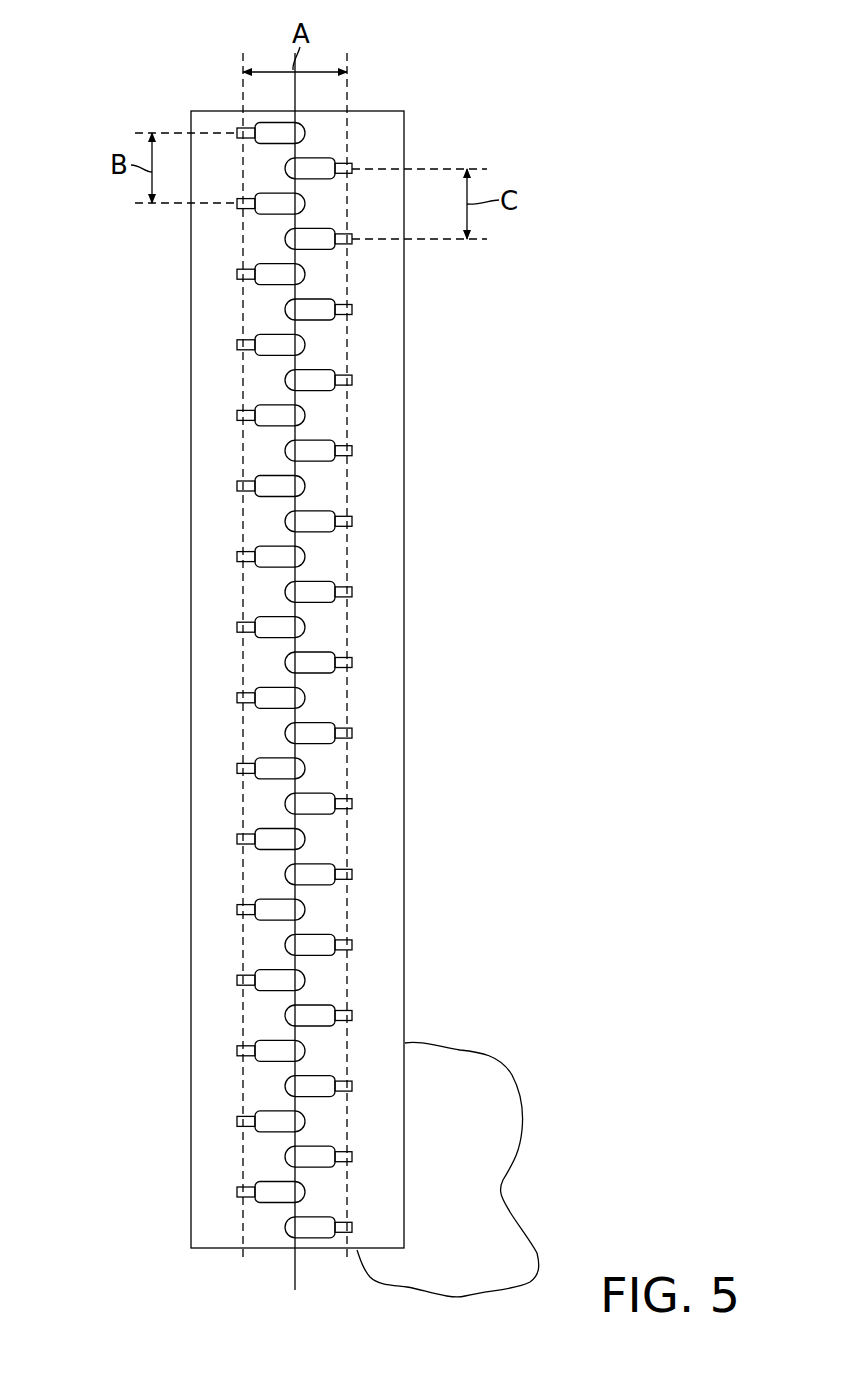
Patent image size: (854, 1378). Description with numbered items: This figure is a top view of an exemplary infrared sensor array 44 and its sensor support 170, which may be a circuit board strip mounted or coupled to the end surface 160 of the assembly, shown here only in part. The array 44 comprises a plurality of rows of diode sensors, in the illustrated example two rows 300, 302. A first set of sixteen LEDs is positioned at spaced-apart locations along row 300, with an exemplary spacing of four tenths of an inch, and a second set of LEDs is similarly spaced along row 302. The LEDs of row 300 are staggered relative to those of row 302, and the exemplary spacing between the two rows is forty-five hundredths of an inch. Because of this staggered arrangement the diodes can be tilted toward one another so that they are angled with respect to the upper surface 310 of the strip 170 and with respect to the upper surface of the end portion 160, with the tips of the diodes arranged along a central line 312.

The array 44 is at (172, 903).
The first row of sensors 300 is at (240, 100).
The second row of sensors 302 is at (348, 100).
The line 312 is at (297, 1267).
The support 170 is at (262, 1250).
The upper surface of the strip 310 is at (372, 1122).
The end surface 160 is at (482, 1200).